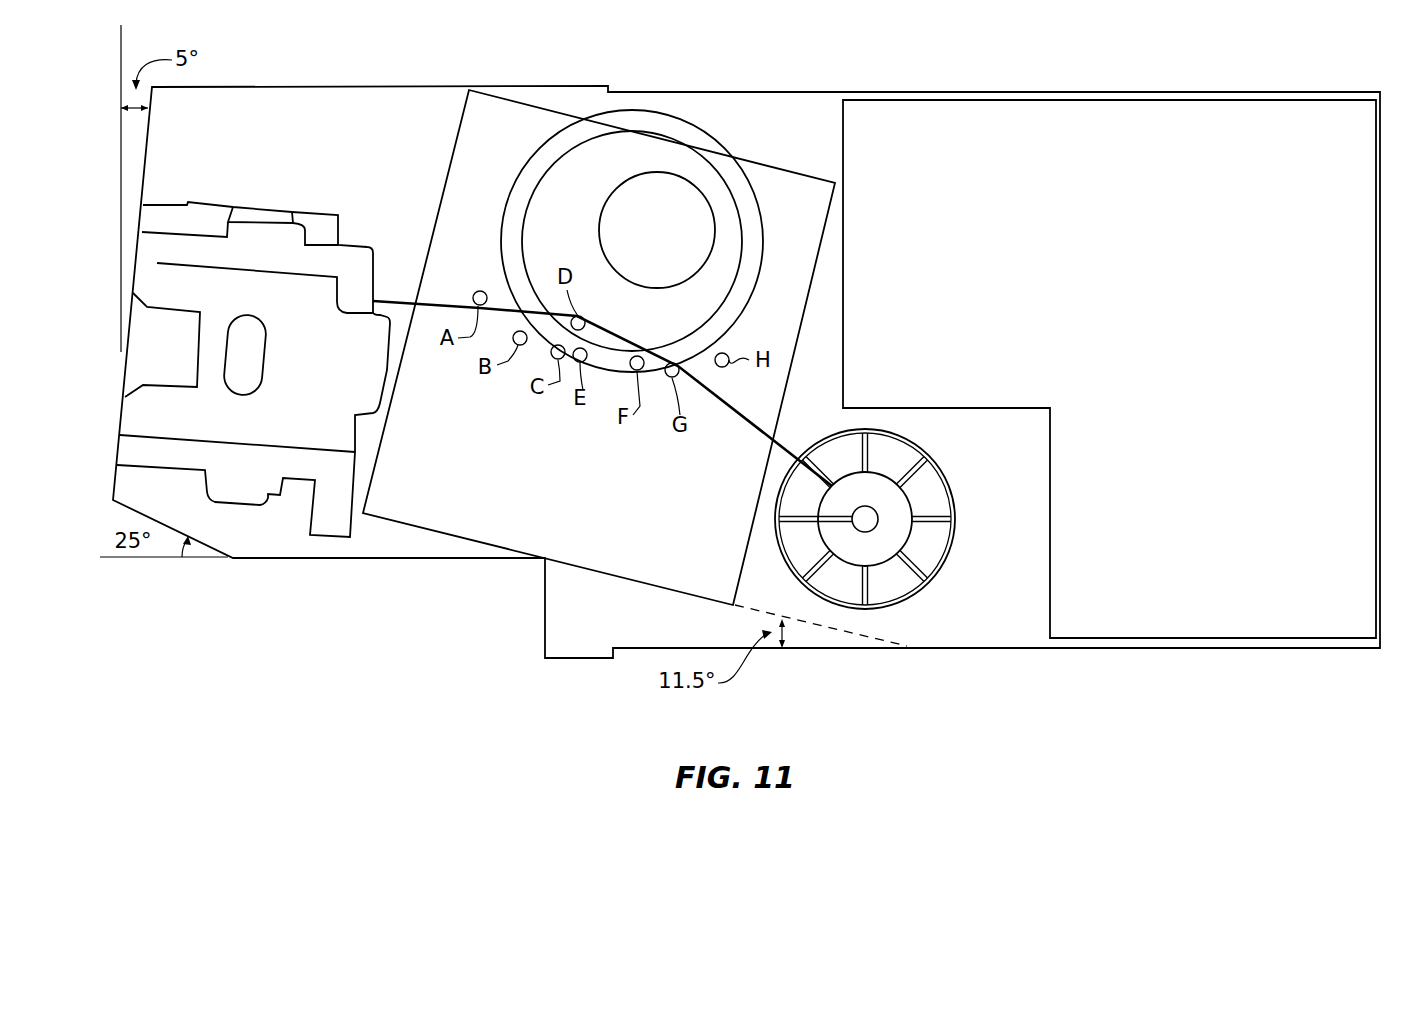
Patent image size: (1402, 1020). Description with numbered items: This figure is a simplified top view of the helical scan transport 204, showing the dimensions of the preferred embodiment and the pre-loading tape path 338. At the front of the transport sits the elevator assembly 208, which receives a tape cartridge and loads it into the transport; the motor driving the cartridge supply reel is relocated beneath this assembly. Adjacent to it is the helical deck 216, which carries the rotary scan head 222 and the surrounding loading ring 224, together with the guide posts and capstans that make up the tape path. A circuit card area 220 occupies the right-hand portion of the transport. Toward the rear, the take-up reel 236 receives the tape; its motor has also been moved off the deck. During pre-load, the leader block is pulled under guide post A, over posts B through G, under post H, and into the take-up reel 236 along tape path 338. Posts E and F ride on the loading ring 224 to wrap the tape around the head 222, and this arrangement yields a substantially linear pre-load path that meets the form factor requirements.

The helical scan transport 204 is at (402, 44).
The elevator assembly 208 is at (294, 391).
The helical deck 216 is at (606, 527).
The circuit card area 220 is at (1121, 220).
The rotary scan head 222 is at (641, 220).
The loading ring 224 is at (682, 132).
The take-up reel 236 is at (956, 477).
The tape path 338 is at (737, 410).